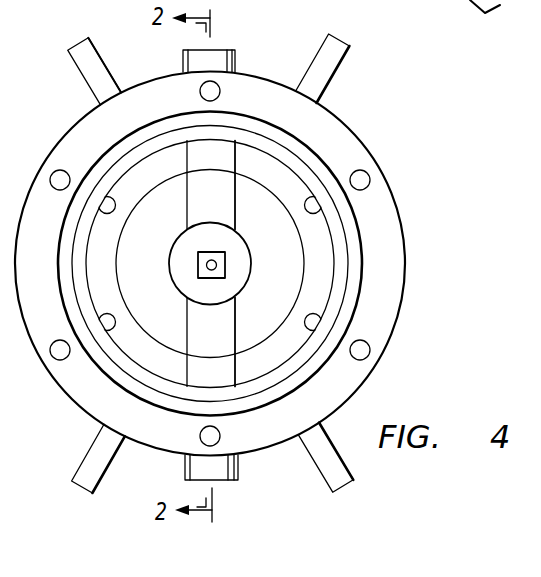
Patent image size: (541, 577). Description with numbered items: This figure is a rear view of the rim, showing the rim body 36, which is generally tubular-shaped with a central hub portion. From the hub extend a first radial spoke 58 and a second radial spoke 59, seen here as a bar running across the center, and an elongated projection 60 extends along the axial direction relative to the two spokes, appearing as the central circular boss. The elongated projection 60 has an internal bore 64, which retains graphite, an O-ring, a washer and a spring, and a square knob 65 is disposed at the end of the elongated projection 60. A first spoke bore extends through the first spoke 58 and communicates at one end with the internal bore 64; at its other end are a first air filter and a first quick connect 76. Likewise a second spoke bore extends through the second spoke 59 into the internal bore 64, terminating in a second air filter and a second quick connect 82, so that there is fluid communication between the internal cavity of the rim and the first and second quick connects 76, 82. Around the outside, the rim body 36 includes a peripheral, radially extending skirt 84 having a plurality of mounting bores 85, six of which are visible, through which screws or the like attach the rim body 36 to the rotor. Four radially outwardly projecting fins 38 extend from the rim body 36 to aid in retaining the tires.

The rim body 36 is at (350, 118).
The radially outwardly projecting fins 38 is at (82, 44).
The first radial spoke 58 is at (228, 214).
The second radial spoke 59 is at (231, 313).
The elongated projection 60 is at (247, 264).
The internal bore 64 is at (197, 258).
The square knob 65 is at (206, 267).
The first quick connect 76 is at (227, 47).
The second quick connect 82 is at (185, 470).
The skirt 84 is at (403, 289).
The mounting bores 85 is at (52, 174).